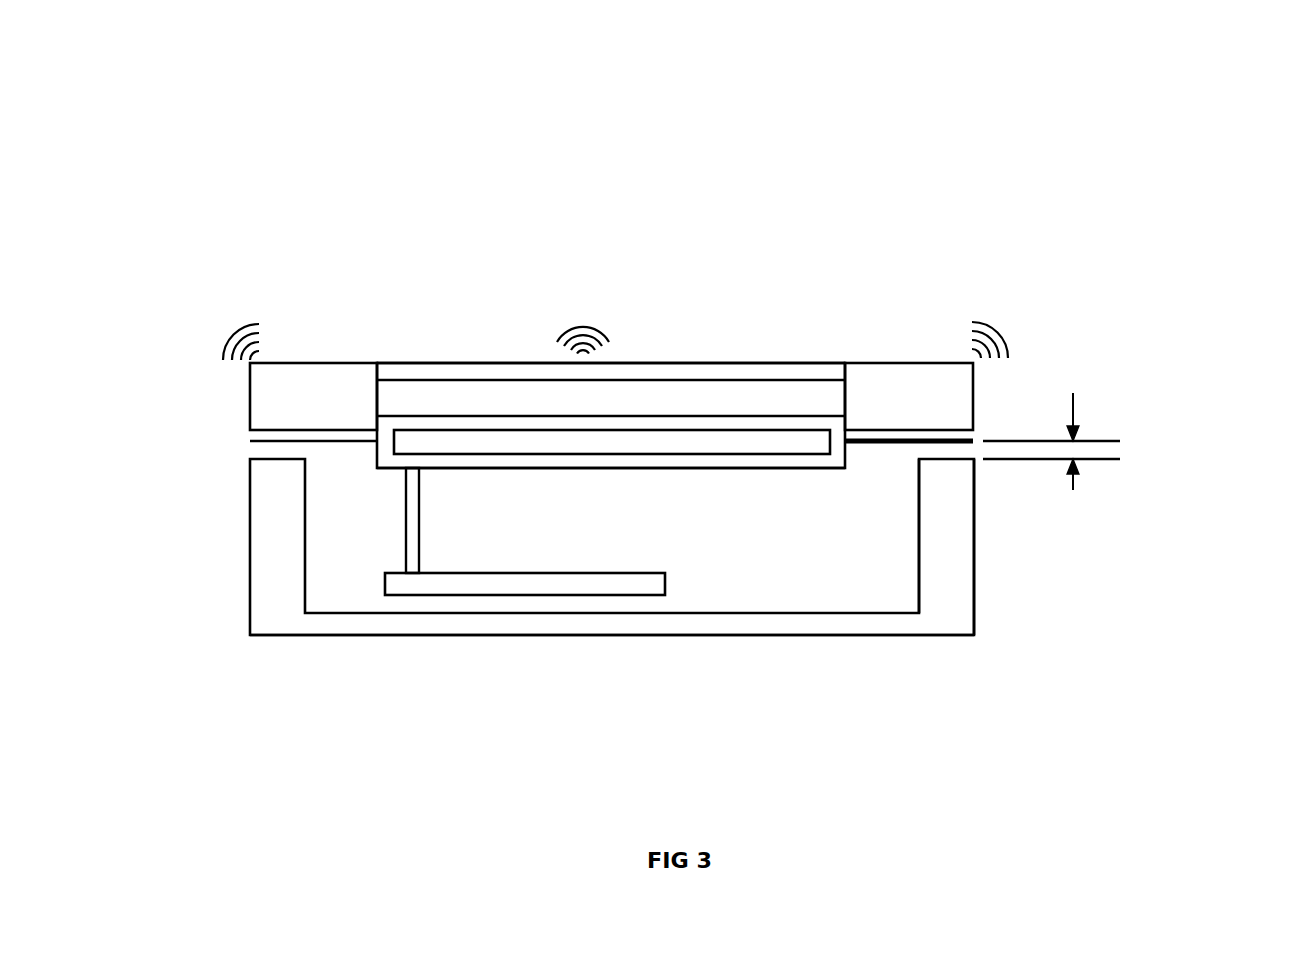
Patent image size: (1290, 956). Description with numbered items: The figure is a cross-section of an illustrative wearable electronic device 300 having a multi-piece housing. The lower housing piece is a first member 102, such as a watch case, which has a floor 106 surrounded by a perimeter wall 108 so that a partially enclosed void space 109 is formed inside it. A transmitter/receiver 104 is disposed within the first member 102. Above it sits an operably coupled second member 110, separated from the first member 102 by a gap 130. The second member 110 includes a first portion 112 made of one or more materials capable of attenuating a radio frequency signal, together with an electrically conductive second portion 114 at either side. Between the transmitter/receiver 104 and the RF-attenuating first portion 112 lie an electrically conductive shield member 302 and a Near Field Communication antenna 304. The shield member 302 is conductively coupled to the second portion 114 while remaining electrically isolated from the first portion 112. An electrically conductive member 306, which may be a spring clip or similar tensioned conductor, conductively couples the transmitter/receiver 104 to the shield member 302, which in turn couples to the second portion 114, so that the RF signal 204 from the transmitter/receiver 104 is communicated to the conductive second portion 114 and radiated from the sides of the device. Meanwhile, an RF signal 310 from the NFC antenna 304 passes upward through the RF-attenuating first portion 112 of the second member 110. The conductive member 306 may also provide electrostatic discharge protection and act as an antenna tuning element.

The wearable electronic device 300 is at (1180, 66).
The first member 102 is at (482, 639).
The transmitter/receiver 104 is at (665, 578).
The floor 106 is at (753, 635).
The perimeter wall 108 is at (974, 575).
The void space 109 is at (841, 532).
The second member 110 is at (803, 359).
The first portion 112 is at (698, 363).
The second portion 114 is at (250, 401).
The gap 130 is at (1108, 440).
The RF signal 204 is at (240, 330).
The shield member 302 is at (450, 467).
The NFC antenna 304 is at (603, 430).
The electrically conductive member 306 is at (419, 525).
The RF signal 310 is at (590, 327).